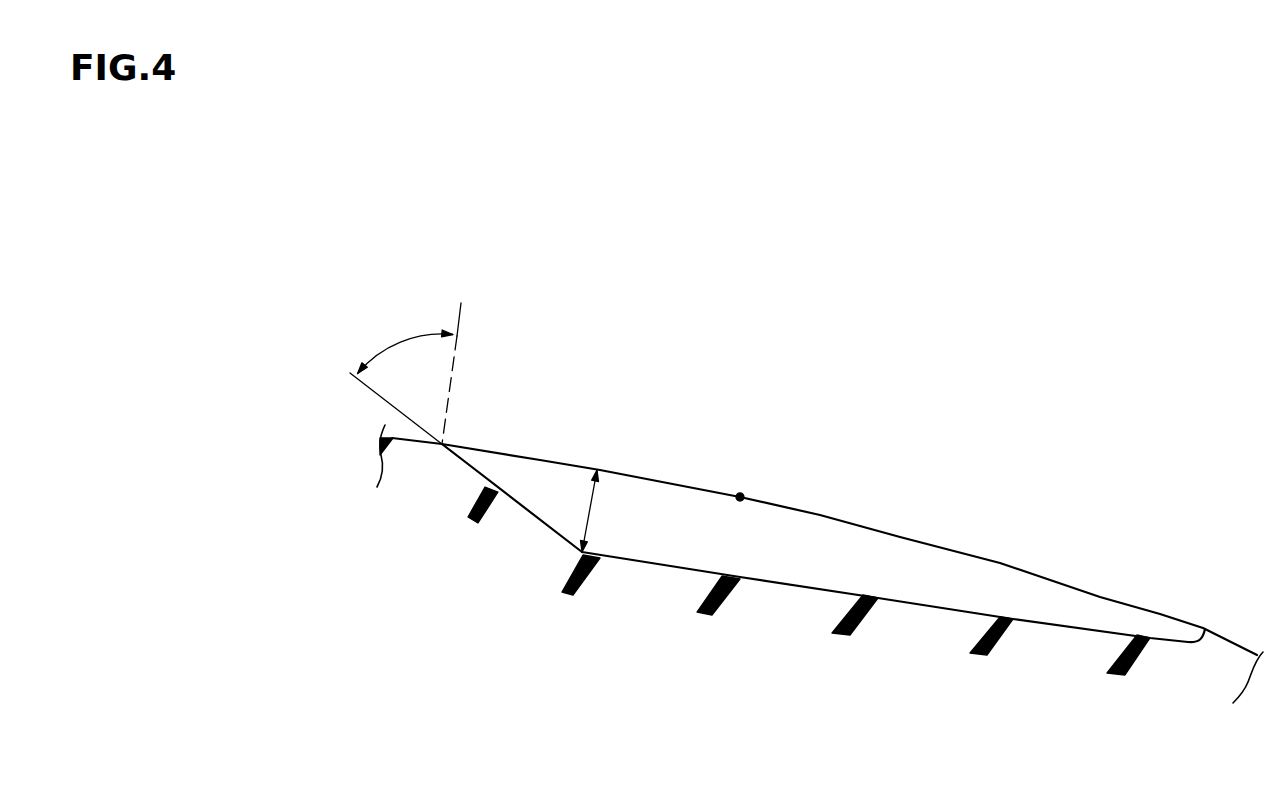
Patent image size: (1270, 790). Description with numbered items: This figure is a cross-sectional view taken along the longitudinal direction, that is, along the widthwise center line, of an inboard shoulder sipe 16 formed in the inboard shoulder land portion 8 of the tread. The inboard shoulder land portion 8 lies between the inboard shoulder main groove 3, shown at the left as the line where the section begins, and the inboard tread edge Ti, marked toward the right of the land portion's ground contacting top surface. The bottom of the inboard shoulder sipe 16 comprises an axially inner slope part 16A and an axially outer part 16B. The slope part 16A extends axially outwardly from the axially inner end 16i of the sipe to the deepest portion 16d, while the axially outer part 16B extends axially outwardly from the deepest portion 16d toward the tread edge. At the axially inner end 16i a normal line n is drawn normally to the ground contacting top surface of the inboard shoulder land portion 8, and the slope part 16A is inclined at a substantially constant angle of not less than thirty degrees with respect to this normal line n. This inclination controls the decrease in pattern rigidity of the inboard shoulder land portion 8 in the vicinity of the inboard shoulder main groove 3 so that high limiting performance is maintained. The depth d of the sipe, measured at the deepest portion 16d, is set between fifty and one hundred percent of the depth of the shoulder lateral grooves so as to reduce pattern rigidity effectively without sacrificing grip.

The inboard shoulder main groove 3 is at (299, 374).
The inboard shoulder land portion 8 is at (697, 463).
The inboard shoulder sipe 16 is at (800, 550).
The slope part 16A is at (542, 513).
The axially outer part 16B is at (663, 560).
The deepest portion 16d is at (585, 553).
The axially inner end 16i is at (442, 444).
The inboard tread edge Ti is at (740, 497).
The normal line n is at (462, 316).
The depth d is at (590, 510).